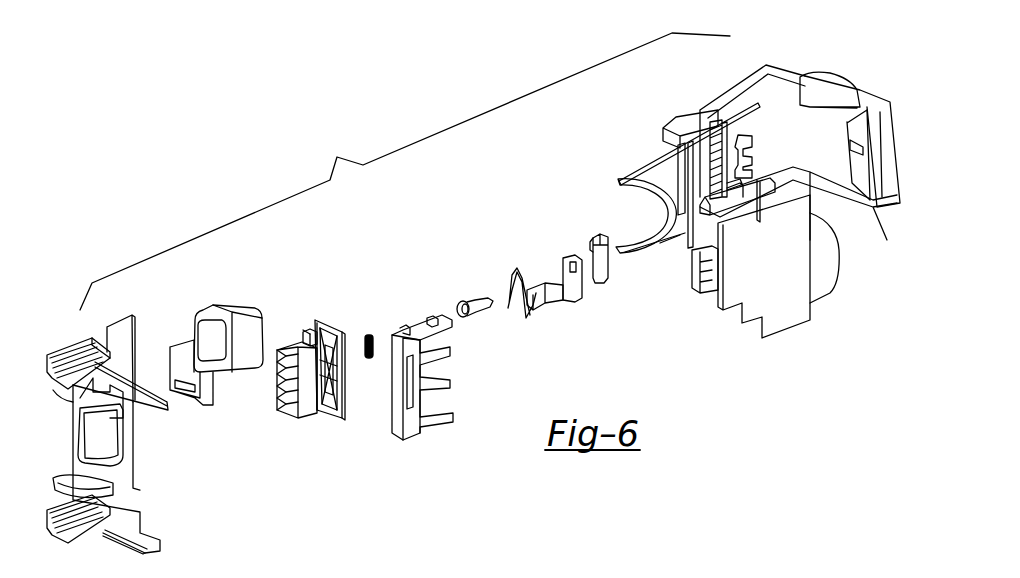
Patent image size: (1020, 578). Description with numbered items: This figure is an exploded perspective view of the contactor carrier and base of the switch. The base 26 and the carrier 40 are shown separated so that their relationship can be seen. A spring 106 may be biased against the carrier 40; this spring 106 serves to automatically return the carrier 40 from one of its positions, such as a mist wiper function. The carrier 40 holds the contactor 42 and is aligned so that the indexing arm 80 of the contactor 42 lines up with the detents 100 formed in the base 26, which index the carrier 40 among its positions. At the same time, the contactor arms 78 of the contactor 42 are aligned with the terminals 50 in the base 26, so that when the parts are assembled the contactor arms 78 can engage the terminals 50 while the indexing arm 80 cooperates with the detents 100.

The base 26 is at (832, 320).
The carrier 40 is at (309, 422).
The contactor 42 is at (258, 314).
The terminals 50 is at (730, 172).
The contactor arms 78 is at (320, 323).
The indexing arm 80 is at (300, 326).
The detents 100 is at (715, 153).
The spring 106 is at (370, 328).